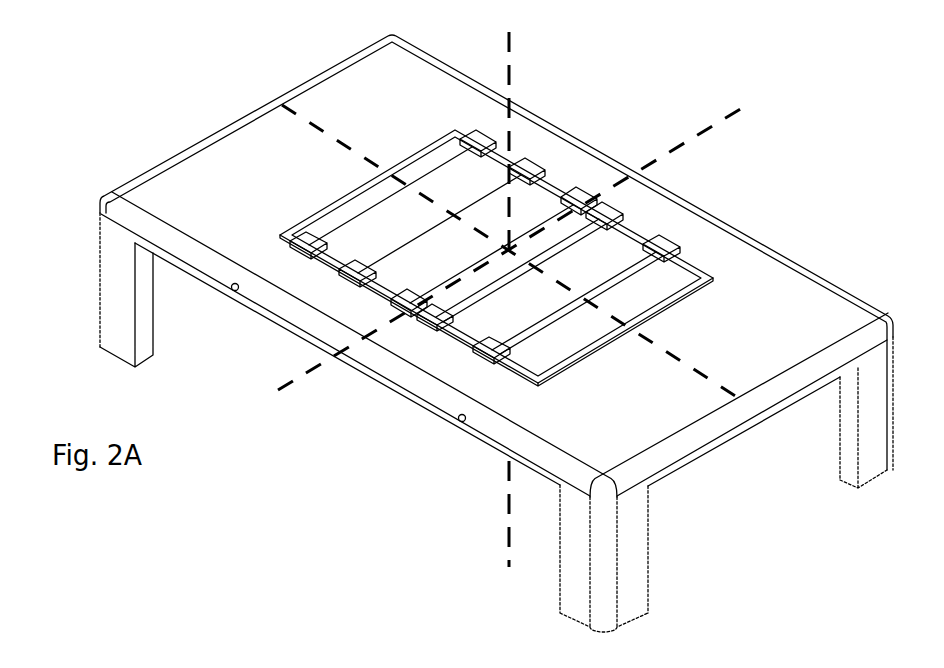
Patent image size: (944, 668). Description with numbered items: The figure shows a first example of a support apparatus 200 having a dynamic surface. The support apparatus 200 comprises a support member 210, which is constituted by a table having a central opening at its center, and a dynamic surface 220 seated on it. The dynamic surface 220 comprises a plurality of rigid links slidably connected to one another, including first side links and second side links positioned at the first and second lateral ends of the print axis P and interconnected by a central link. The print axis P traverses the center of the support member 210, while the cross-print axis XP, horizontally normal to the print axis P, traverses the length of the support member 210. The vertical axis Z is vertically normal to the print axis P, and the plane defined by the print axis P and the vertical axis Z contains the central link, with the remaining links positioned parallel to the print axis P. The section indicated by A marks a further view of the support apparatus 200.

The support apparatus 200 is at (496, 321).
The support member 210 is at (696, 240).
The dynamic surface 220 is at (490, 190).
The cross-print axis XP is at (292, 107).
The print axis P is at (737, 107).
The vertical axis Z is at (513, 35).
The section line A- A is at (163, 157).